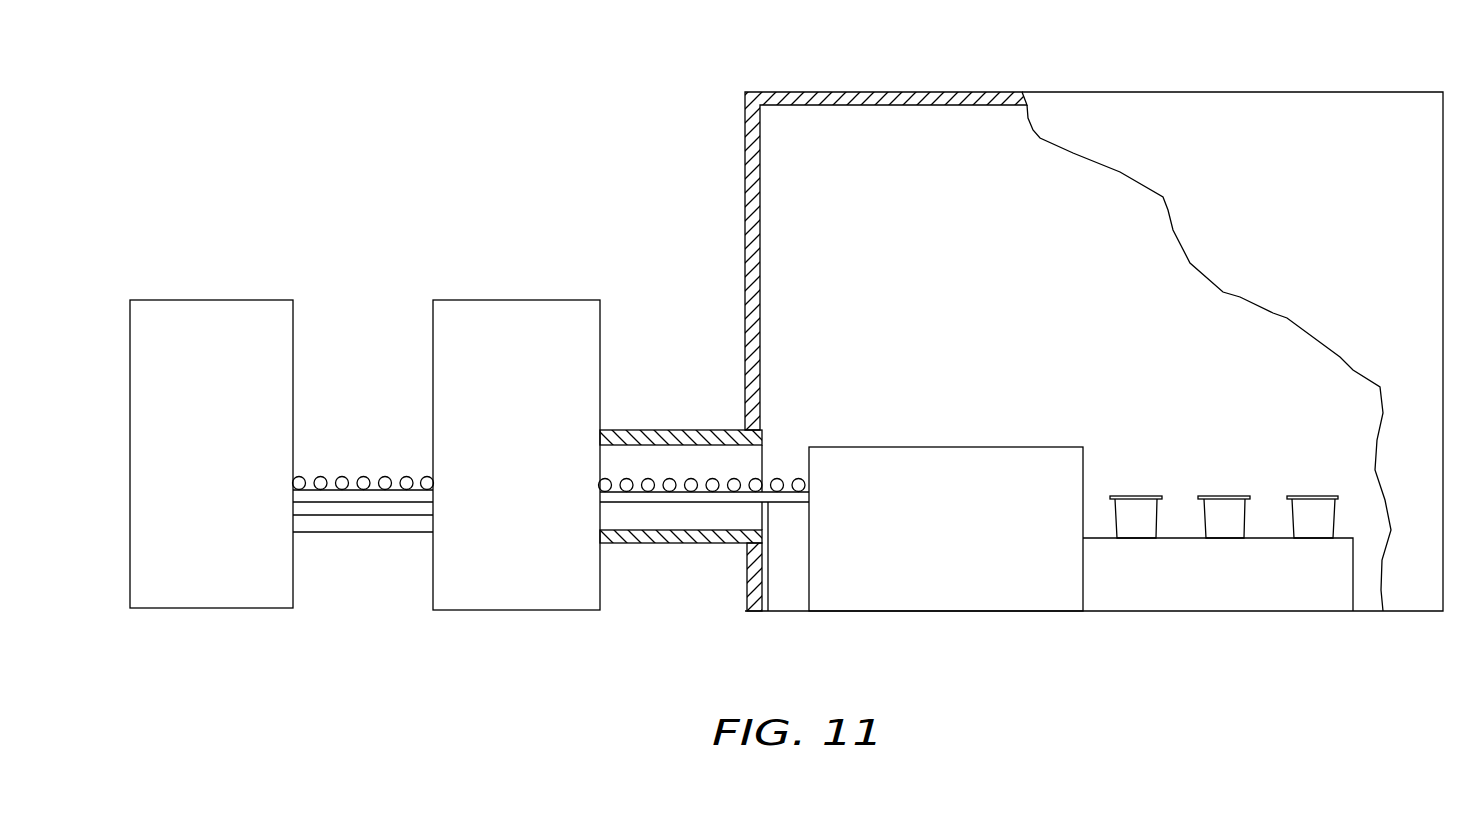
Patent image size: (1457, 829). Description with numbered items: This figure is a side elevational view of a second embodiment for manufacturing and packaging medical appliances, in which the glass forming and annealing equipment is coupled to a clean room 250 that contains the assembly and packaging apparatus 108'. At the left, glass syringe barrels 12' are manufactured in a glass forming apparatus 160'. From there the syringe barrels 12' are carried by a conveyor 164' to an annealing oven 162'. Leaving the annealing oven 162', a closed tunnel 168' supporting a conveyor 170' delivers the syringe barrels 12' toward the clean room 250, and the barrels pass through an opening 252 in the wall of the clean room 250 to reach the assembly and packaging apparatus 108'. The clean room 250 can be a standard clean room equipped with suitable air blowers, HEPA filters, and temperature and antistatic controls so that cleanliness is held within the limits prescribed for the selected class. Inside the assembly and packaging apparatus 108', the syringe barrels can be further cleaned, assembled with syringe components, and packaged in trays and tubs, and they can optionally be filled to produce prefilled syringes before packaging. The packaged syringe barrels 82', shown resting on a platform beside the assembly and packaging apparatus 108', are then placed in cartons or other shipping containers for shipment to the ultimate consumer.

The glass forming apparatus 160' is at (211, 411).
The annealing oven 162' is at (516, 412).
The conveyor 164' is at (363, 538).
The glass syringe barrels 12' is at (555, 452).
The closed tunnel 168' is at (681, 408).
The conveyor 170' is at (681, 544).
The opening 252 is at (763, 446).
The clean room 250 is at (903, 86).
The assembly and packaging apparatus 108' is at (1081, 480).
The packaged syringe barrels 82' is at (1224, 470).